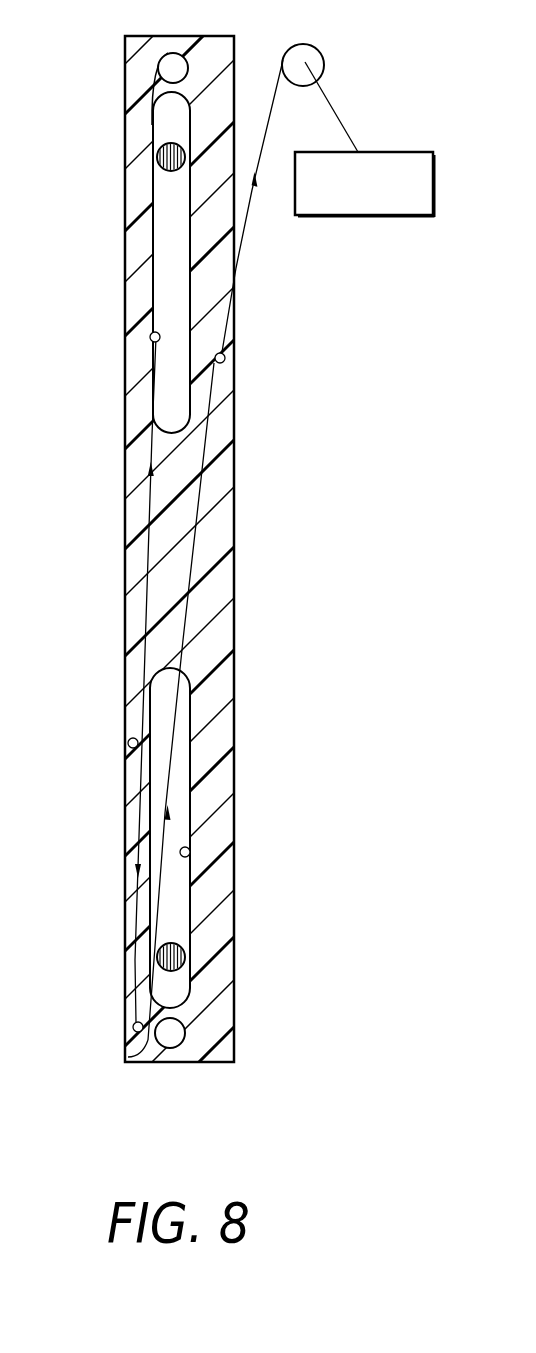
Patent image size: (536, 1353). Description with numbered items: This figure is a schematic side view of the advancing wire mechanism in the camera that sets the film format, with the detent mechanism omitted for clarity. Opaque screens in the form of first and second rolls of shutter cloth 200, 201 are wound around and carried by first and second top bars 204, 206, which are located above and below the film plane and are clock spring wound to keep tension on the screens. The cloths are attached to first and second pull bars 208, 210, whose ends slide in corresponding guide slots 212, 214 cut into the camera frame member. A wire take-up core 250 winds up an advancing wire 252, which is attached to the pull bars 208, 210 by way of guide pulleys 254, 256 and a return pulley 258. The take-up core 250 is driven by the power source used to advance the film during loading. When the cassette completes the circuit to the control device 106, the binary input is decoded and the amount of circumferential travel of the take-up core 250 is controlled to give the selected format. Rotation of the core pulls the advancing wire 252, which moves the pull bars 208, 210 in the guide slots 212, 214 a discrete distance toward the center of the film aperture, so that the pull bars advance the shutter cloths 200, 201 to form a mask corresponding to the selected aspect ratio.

The first roll of shutter cloth 200 is at (150, 89).
The second roll of shutter cloth 201 is at (138, 1063).
The first top bar 204 is at (127, 72).
The second top bar 206 is at (185, 1033).
The first pull bar 208 is at (158, 161).
The second pull bar 210 is at (176, 942).
The first guide slot 212 is at (150, 337).
The second guide slot 214 is at (190, 852).
The wire take-up core 250 is at (312, 46).
The advancing wire 252 is at (197, 540).
The guide pulley 254 is at (128, 743).
The guide pulley 256 is at (225, 358).
The return pulley 258 is at (135, 1033).
The control device 106 is at (365, 216).